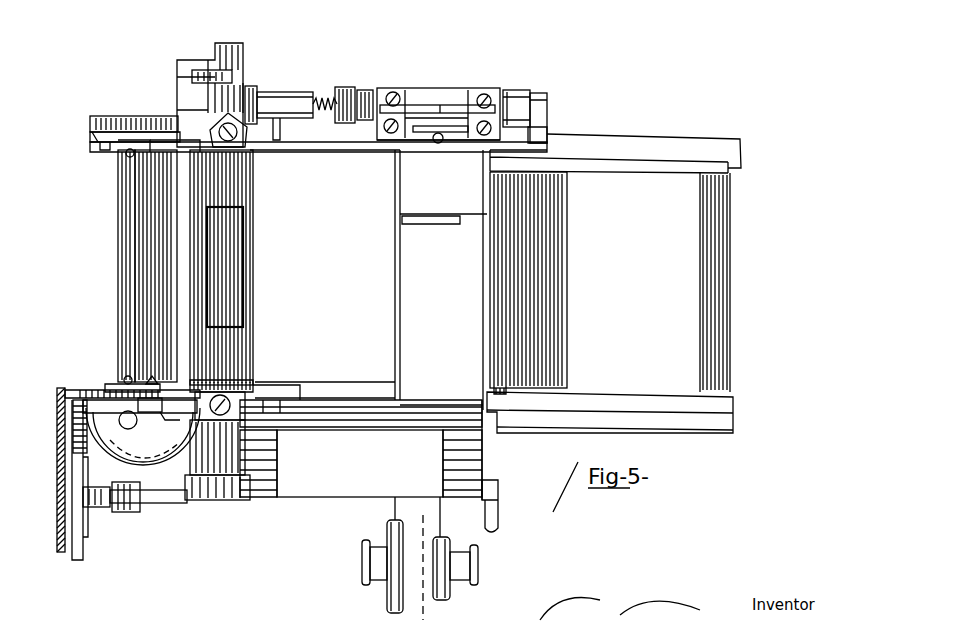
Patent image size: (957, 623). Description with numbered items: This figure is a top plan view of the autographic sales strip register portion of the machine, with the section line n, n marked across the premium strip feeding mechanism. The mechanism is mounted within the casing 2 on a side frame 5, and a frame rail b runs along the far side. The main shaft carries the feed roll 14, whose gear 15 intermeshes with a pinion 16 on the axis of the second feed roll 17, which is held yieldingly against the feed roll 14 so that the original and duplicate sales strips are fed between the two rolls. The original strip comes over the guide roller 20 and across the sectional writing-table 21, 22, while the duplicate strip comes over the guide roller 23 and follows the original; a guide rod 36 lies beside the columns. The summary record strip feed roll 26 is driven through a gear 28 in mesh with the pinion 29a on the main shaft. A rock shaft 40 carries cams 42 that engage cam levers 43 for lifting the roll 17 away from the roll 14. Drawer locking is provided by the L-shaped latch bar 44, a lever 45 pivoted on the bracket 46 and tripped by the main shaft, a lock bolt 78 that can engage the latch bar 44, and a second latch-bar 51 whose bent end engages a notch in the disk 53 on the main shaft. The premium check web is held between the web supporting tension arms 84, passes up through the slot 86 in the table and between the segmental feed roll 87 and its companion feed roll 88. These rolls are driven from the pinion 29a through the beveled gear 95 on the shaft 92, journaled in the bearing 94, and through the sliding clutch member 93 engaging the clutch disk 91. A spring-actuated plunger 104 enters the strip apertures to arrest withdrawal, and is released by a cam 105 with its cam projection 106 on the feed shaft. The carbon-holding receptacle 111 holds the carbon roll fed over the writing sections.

The casing 2 is at (60, 475).
The side frame 5 is at (603, 408).
The upper frame rail b is at (640, 160).
The feed roll 14 is at (247, 196).
The gear 15 is at (196, 382).
The pinion 16 is at (246, 385).
The second feed roll 17 is at (237, 268).
The guide roller 20 is at (545, 305).
The sectional writing-table section 21 is at (441, 280).
The sectional writing-table section 22 is at (327, 275).
The guide roller 23 is at (520, 262).
The summary record strip feed roll 26 is at (160, 243).
The gear 28 is at (134, 118).
The pinion 29a is at (217, 110).
The guide rod 36 is at (497, 305).
The rock shaft 40 is at (125, 292).
The cam 42 is at (122, 150).
The cam lever 43 is at (160, 148).
The L-shaped latch bar 44 is at (97, 496).
The lever 45 is at (165, 498).
The bracket 46 is at (132, 512).
The second latch-bar 51 is at (207, 70).
The disk 53 is at (252, 86).
The lock bolt 78 is at (73, 425).
The web supporting tension arm 84 is at (385, 595).
The slot 86 is at (430, 224).
The feed roll 87 is at (456, 130).
The feed roll 88 is at (455, 112).
The clutch disk 91 is at (372, 88).
The shaft 92 is at (345, 87).
The sliding clutch member 93 is at (370, 90).
The bearing 94 is at (298, 104).
The beveled gear 95 is at (324, 98).
The plunger 104 is at (435, 148).
The cam 105 is at (518, 85).
The cam projection 106 is at (548, 100).
The carbon-holding receptacle 111 is at (470, 462).
The section line n is at (440, 105).